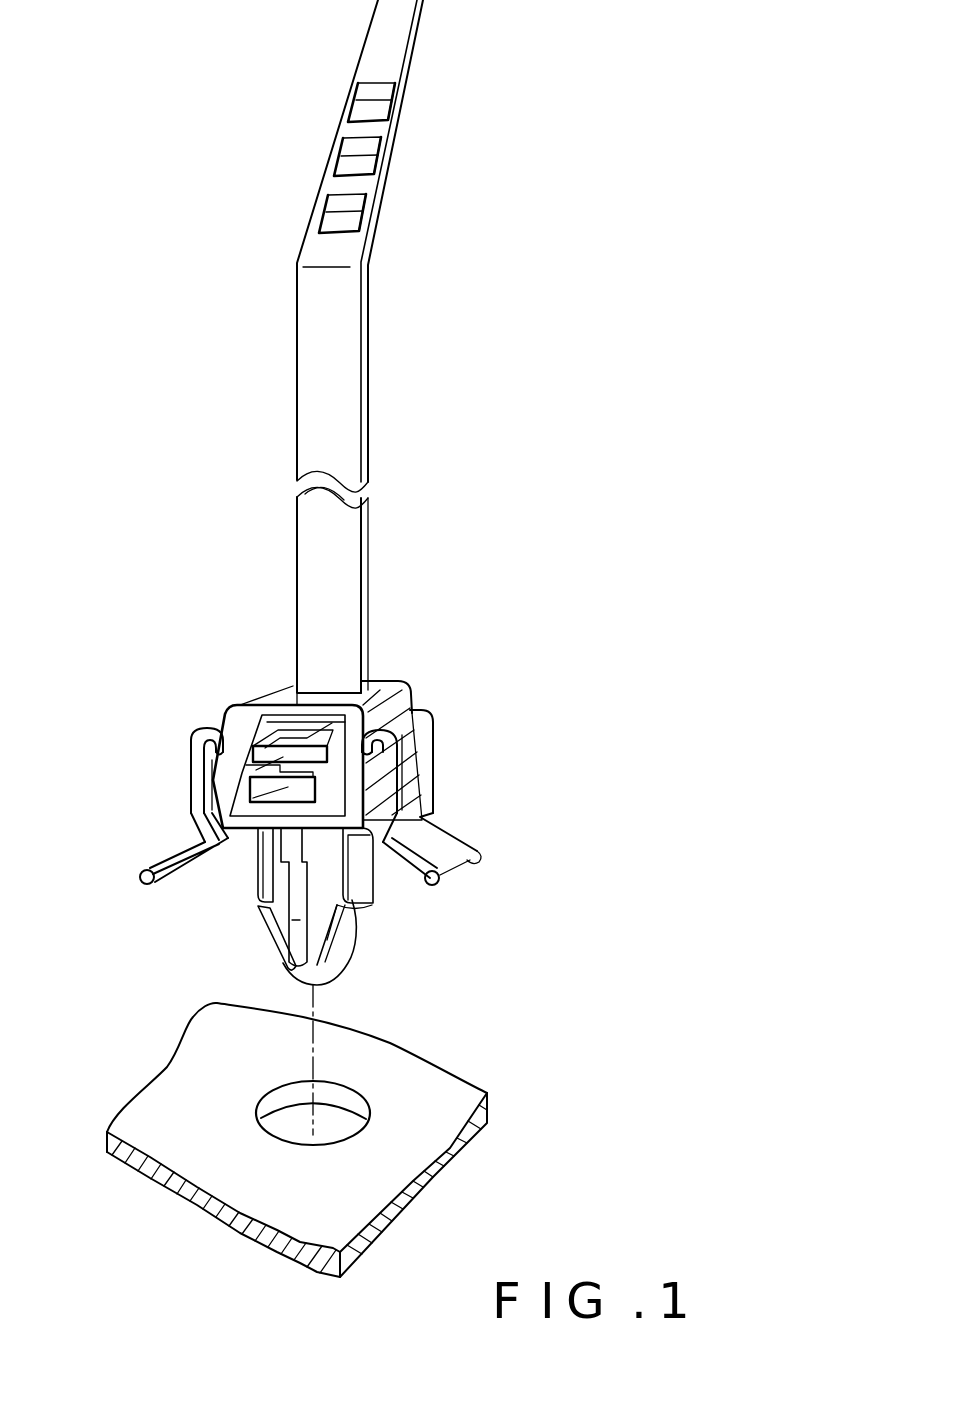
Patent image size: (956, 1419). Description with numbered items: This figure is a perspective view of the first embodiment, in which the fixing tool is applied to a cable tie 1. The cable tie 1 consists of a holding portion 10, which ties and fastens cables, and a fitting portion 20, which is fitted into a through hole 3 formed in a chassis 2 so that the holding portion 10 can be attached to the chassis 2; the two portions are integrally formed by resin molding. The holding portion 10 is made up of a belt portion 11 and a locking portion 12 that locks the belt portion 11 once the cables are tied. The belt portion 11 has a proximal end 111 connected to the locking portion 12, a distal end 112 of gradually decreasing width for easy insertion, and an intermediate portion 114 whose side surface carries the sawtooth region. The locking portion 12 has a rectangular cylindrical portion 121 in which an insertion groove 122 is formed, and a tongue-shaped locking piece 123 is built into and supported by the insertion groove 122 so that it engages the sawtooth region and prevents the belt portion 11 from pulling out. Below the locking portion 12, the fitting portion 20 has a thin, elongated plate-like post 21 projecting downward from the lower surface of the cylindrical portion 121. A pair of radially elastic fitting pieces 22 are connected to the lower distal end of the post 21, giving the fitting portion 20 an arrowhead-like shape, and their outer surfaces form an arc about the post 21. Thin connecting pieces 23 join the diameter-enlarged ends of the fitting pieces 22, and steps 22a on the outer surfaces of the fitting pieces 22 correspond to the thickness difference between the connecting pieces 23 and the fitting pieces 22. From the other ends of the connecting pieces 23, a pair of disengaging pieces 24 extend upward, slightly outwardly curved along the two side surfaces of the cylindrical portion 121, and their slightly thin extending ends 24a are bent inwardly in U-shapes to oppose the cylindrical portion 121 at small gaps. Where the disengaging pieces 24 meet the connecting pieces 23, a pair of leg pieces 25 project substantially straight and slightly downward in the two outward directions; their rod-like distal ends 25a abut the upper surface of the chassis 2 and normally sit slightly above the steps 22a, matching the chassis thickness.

The cable tie 1 is at (443, 75).
The holding portion 10 is at (392, 465).
The belt portion 11 is at (352, 387).
The proximal end 111 is at (310, 648).
The distal end 112 is at (346, 128).
The intermediate portion 114 is at (365, 554).
The locking portion 12 is at (390, 682).
The cylindrical portion 121 is at (405, 700).
The insertion groove 122 is at (287, 795).
The locking piece 123 is at (290, 772).
The fitting portion 20 is at (500, 864).
The post 21 is at (296, 940).
The fitting pieces 22 is at (268, 928).
The steps 22a is at (350, 908).
The connecting pieces 23 is at (362, 877).
The disengaging pieces 24 is at (194, 773).
The extending ends 24a is at (214, 722).
The leg pieces 25 is at (176, 852).
The distal ends 25a is at (453, 880).
The chassis 2 is at (432, 1130).
The through hole 3 is at (265, 1108).